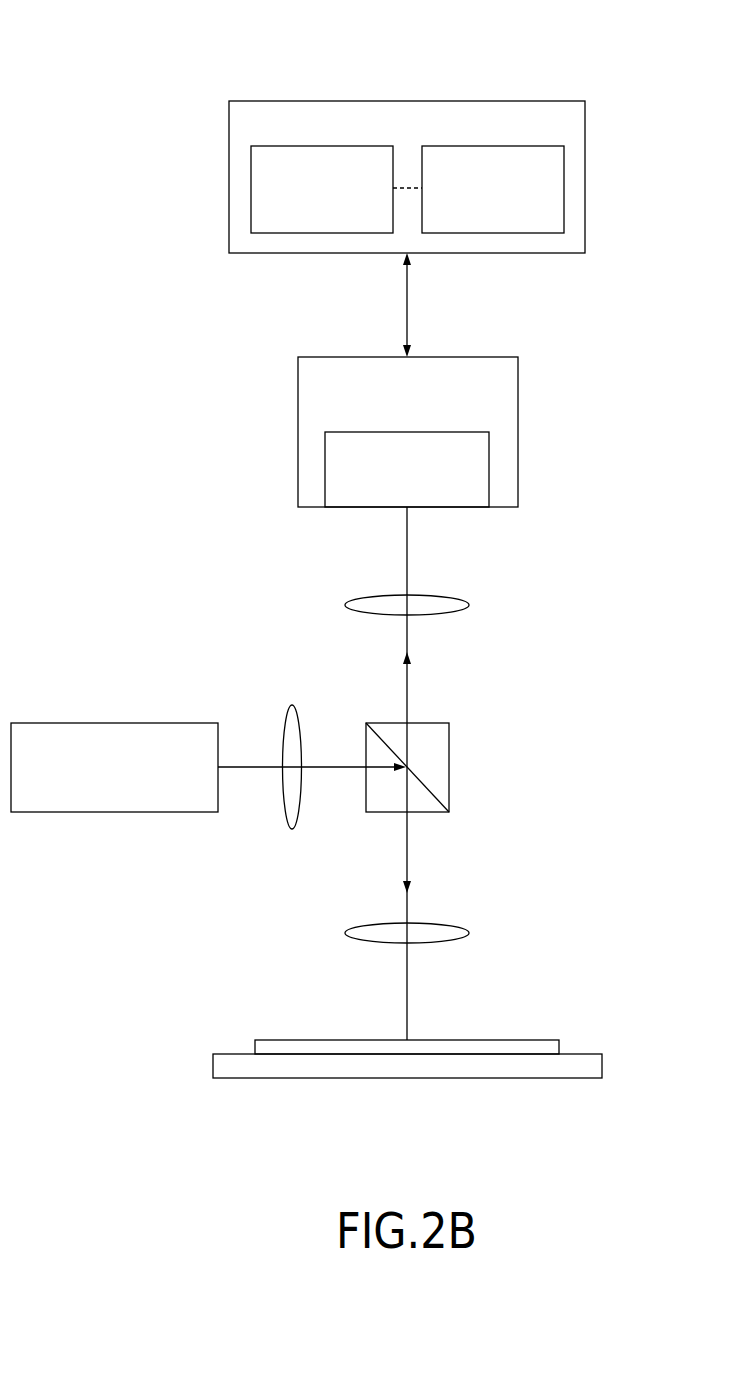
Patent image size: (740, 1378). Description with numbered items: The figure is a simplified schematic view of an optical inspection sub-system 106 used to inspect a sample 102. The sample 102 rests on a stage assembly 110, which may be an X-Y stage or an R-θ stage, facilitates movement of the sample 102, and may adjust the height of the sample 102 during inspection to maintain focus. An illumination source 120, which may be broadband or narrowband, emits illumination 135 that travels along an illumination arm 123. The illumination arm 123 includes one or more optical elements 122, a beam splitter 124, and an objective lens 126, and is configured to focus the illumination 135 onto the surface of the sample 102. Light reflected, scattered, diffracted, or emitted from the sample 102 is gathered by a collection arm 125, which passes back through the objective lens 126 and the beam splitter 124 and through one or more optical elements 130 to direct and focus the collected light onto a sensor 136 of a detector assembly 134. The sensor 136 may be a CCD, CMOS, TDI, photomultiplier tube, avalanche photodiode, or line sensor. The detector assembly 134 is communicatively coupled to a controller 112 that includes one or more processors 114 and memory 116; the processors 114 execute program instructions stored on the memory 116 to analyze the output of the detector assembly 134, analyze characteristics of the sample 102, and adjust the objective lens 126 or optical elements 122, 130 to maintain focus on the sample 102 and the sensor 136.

The optical inspection sub-system 106 is at (172, 46).
The controller 112 is at (426, 135).
The processors 114 is at (340, 200).
The memory 116 is at (512, 200).
The detector assembly 134 is at (426, 406).
The sensor 136 is at (426, 483).
The illumination arm 123 is at (262, 596).
The optical elements 130 is at (457, 601).
The collection arm 125 is at (509, 682).
The illumination source 120 is at (133, 776).
The illumination 135 is at (252, 767).
The optical elements 122 is at (292, 827).
The beam splitter 124 is at (449, 763).
The objective lens 126 is at (458, 928).
The sample 102 is at (559, 1050).
The stage assembly 110 is at (602, 1062).